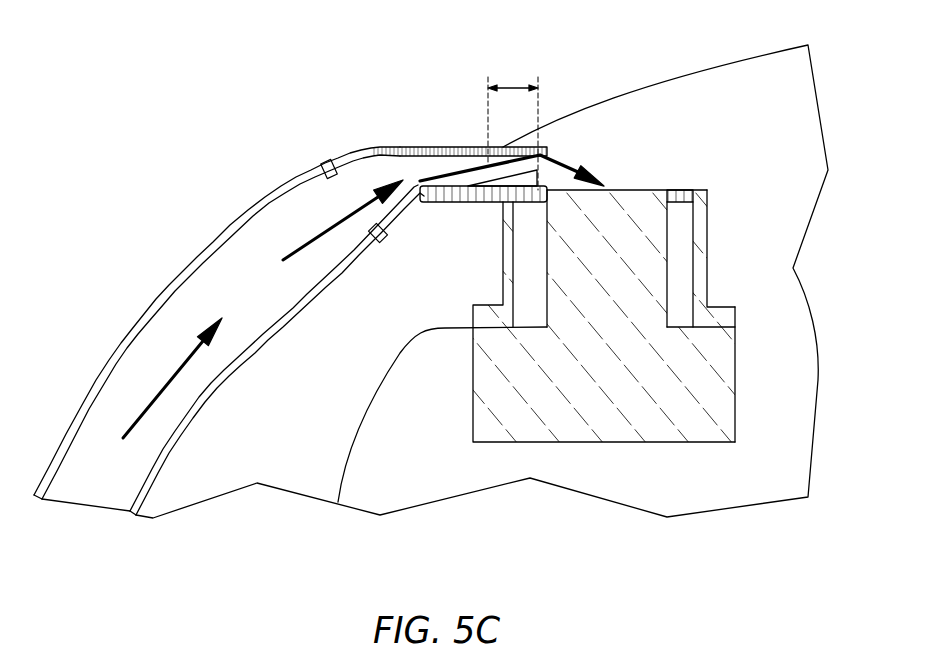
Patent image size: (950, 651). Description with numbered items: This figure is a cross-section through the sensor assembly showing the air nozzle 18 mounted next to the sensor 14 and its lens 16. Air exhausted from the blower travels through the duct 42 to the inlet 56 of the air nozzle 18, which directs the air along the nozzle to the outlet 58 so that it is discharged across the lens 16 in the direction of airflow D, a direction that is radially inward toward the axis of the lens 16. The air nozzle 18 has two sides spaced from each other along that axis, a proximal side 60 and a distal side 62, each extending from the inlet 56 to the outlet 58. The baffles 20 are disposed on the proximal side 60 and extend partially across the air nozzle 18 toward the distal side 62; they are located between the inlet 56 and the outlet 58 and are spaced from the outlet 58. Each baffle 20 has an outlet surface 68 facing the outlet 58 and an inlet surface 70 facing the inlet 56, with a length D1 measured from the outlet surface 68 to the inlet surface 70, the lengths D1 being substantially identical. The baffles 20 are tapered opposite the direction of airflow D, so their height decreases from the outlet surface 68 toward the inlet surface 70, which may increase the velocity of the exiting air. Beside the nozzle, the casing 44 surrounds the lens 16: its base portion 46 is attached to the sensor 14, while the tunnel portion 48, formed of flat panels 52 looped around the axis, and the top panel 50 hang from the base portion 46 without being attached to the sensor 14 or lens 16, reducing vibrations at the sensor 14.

The sensor 14 is at (670, 288).
The lens 16 is at (648, 189).
The air nozzle 18 is at (440, 122).
The baffles 20 is at (505, 188).
The duct 42 is at (200, 263).
The casing 44 is at (743, 255).
The base portion 46 is at (740, 317).
The tunnel portion 48 is at (717, 202).
The top panel 50 is at (693, 190).
The flat panels 52 is at (708, 230).
The inlet 56 is at (317, 192).
The outlet 58 is at (560, 155).
The proximal side 60 is at (434, 204).
The distal side 62 is at (388, 147).
The outlet surfaces 68 is at (546, 184).
The inlet surfaces 70 is at (468, 187).
The direction of airflow D is at (592, 164).
The length D1 is at (513, 84).